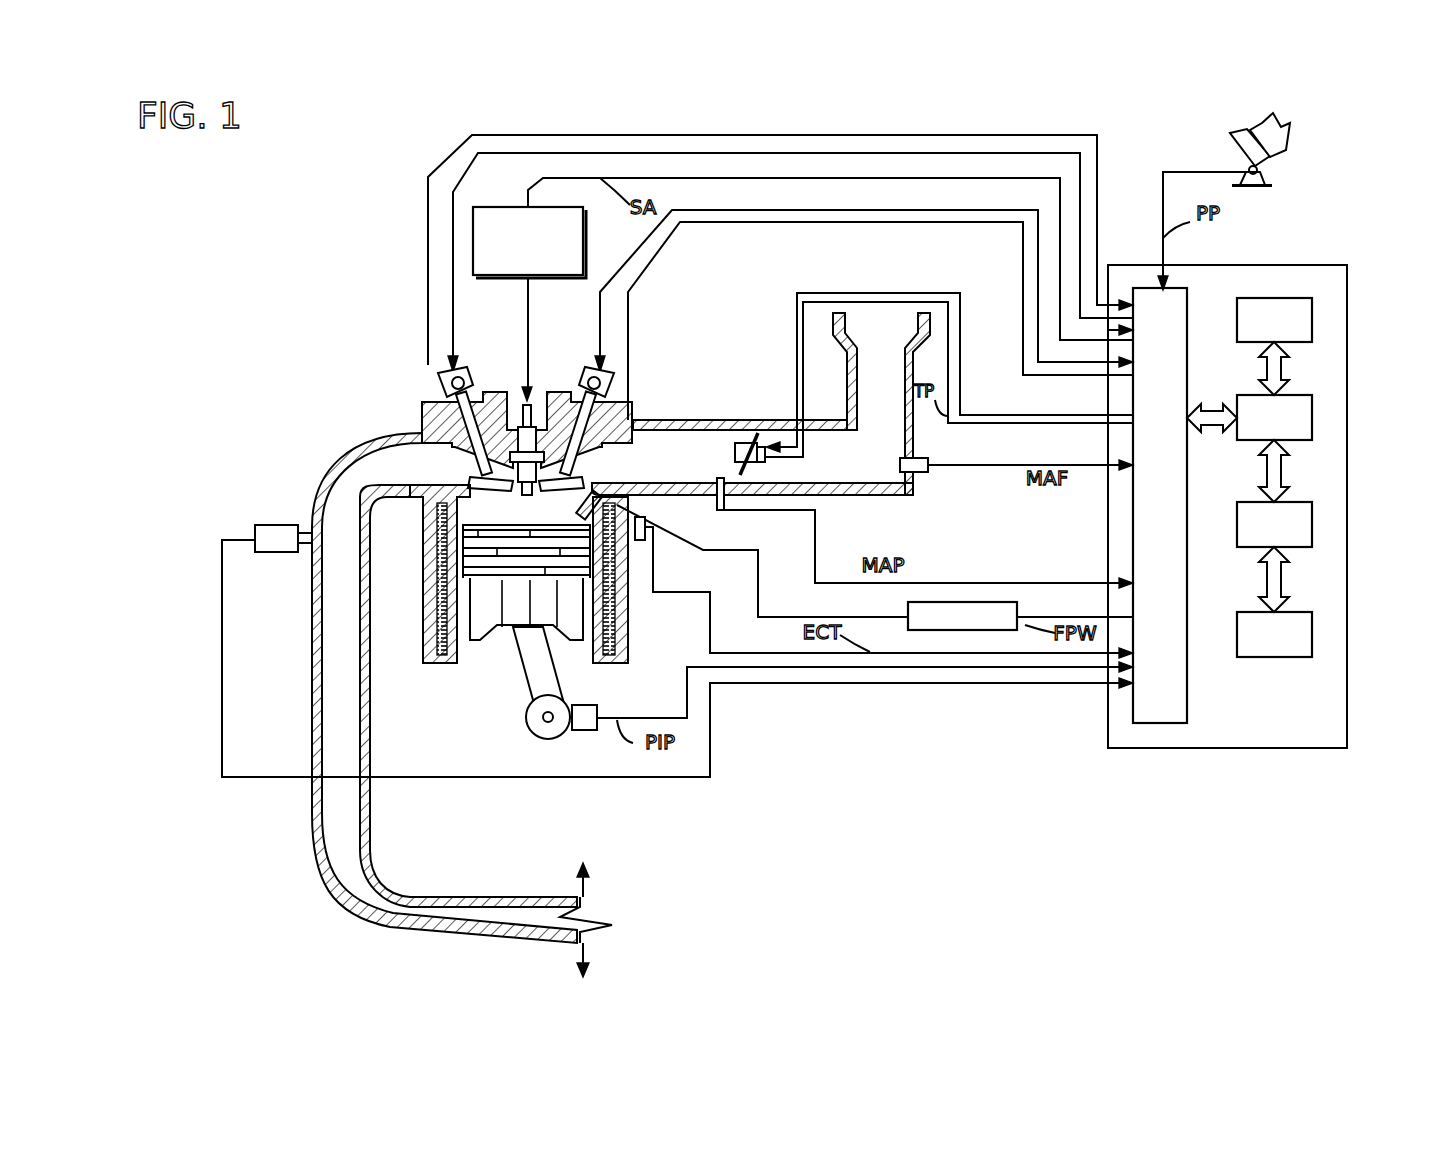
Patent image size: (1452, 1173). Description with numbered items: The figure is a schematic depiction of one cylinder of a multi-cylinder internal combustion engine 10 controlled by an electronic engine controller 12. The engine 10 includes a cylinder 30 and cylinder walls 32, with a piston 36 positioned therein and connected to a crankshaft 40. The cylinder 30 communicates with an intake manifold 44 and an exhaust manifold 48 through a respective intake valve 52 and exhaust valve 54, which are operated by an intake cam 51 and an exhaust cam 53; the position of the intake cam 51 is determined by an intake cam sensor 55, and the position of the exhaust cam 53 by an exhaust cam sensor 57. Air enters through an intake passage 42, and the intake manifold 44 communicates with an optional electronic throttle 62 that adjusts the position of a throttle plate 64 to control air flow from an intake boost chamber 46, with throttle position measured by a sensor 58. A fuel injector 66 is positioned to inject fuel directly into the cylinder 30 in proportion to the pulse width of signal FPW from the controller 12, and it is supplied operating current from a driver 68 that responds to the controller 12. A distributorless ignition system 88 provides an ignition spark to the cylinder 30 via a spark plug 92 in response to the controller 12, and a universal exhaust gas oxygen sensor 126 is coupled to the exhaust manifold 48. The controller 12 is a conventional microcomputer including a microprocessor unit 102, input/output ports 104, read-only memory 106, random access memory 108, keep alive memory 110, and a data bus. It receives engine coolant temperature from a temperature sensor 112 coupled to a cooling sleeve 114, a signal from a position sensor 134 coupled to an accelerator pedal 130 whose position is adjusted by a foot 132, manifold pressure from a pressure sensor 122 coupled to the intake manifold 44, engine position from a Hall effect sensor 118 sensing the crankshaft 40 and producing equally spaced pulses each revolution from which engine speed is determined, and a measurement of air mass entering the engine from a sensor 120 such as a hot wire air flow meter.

The internal combustion engine 10 is at (352, 350).
The electronic engine controller 12 is at (1347, 267).
The cylinder 30 is at (527, 503).
The cylinder walls 32 is at (467, 648).
The piston 36 is at (510, 610).
The crankshaft 40 is at (540, 737).
The intake passage 42 is at (881, 404).
The intake manifold 44 is at (752, 457).
The intake boost chamber 46 is at (782, 468).
The exhaust manifold 48 is at (462, 705).
The intake cam 51 is at (587, 366).
The intake valve 52 is at (567, 473).
The exhaust cam 53 is at (467, 367).
The exhaust valve 54 is at (487, 478).
The intake cam sensor 55 is at (600, 397).
The exhaust cam sensor 57 is at (443, 392).
The throttle position sensor 58 is at (760, 430).
The electronic throttle 62 is at (735, 443).
The throttle plate 64 is at (748, 430).
The fuel injector 66 is at (636, 545).
The driver 68 is at (912, 628).
The distributorless ignition system 88 is at (493, 207).
The spark plug 92 is at (533, 417).
The microprocessor unit 102 is at (1312, 420).
The input/output ports 104 is at (1192, 296).
The read-only memory 106 is at (1312, 318).
The random access memory 108 is at (1312, 524).
The keep alive memory 110 is at (1312, 634).
The temperature sensor 112 is at (633, 560).
The cooling sleeve 114 is at (628, 630).
The Hall effect sensor 118 is at (573, 733).
The air mass sensor 120 is at (928, 460).
The pressure sensor 122 is at (721, 478).
The Universal Exhaust Gas Oxygen sensor 126 is at (255, 530).
The accelerator pedal 130 is at (1230, 137).
The foot 132 is at (1285, 130).
The position sensor 134 is at (1265, 172).